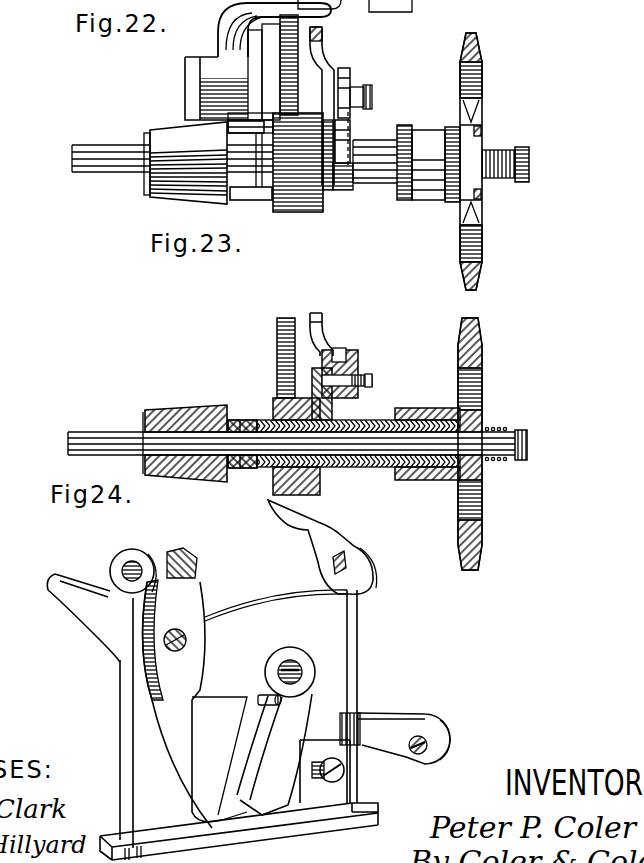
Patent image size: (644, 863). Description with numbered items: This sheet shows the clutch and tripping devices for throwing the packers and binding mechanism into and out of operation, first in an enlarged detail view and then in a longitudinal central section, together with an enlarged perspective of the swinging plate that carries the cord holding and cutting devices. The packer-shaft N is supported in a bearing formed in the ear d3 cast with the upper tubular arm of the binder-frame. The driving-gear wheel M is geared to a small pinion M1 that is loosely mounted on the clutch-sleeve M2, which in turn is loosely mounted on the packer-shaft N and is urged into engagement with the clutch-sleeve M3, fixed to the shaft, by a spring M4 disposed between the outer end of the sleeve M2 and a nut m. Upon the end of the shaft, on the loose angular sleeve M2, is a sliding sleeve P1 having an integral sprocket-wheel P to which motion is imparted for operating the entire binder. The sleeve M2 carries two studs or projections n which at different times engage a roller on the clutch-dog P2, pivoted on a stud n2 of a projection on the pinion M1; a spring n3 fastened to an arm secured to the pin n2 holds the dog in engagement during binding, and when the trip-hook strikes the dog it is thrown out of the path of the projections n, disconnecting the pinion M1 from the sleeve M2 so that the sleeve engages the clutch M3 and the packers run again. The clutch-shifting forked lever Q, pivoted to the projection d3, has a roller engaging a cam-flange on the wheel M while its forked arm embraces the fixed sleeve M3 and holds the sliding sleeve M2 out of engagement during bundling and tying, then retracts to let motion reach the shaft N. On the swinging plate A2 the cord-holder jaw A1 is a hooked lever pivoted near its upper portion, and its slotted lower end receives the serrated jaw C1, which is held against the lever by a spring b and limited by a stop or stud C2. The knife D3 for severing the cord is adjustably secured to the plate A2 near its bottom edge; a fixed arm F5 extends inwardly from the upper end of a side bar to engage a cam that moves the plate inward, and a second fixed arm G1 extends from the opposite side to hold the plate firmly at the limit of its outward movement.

In FIG. 22, the clutch-shifting forked lever Q is at (236, 112).
In FIG. 22, the packer-shaft N is at (100, 150).
In FIG. 23, the packer-shaft N is at (94, 430).
In FIG. 22, the ear d3 is at (185, 163).
In FIG. 23, the ear d3 is at (185, 432).
In FIG. 22, the clutch-dog P2 is at (327, 55).
In FIG. 23, the clutch-dog P2 is at (325, 336).
In FIG. 22, the spring n3 is at (350, 92).
In FIG. 23, the spring n3 is at (344, 372).
In FIG. 22, the stud n2 is at (372, 98).
In FIG. 23, the stud n2 is at (372, 381).
In FIG. 22, the studs or projections n is at (352, 140).
In FIG. 23, the driving-gear wheel M is at (277, 350).
In FIG. 23, the pinion M1 is at (273, 403).
In FIG. 23, the clutch-sleeve M3 is at (254, 468).
In FIG. 23, the spring M4 is at (505, 428).
In FIG. 22, the nut m is at (505, 164).
In FIG. 23, the nut m is at (527, 440).
In FIG. 23, the clutch-sleeve M2 is at (498, 462).
In FIG. 23, the sliding sleeve P1 is at (430, 481).
In FIG. 22, the sprocket-wheel P is at (471, 161).
In FIG. 23, the sprocket-wheel P is at (482, 537).
In FIG. 24, the fixed arm G1 is at (63, 598).
In FIG. 24, the fixed arm F5 is at (292, 524).
In FIG. 24, the cord-holder jaw A1 is at (200, 700).
In FIG. 24, the stop or stud C2 is at (262, 698).
In FIG. 24, the serrated jaw C1 is at (282, 703).
In FIG. 24, the swinging frame or plate A2 is at (131, 729).
In FIG. 24, the spring b is at (395, 738).
In FIG. 24, the knife or cutter D3 is at (321, 773).